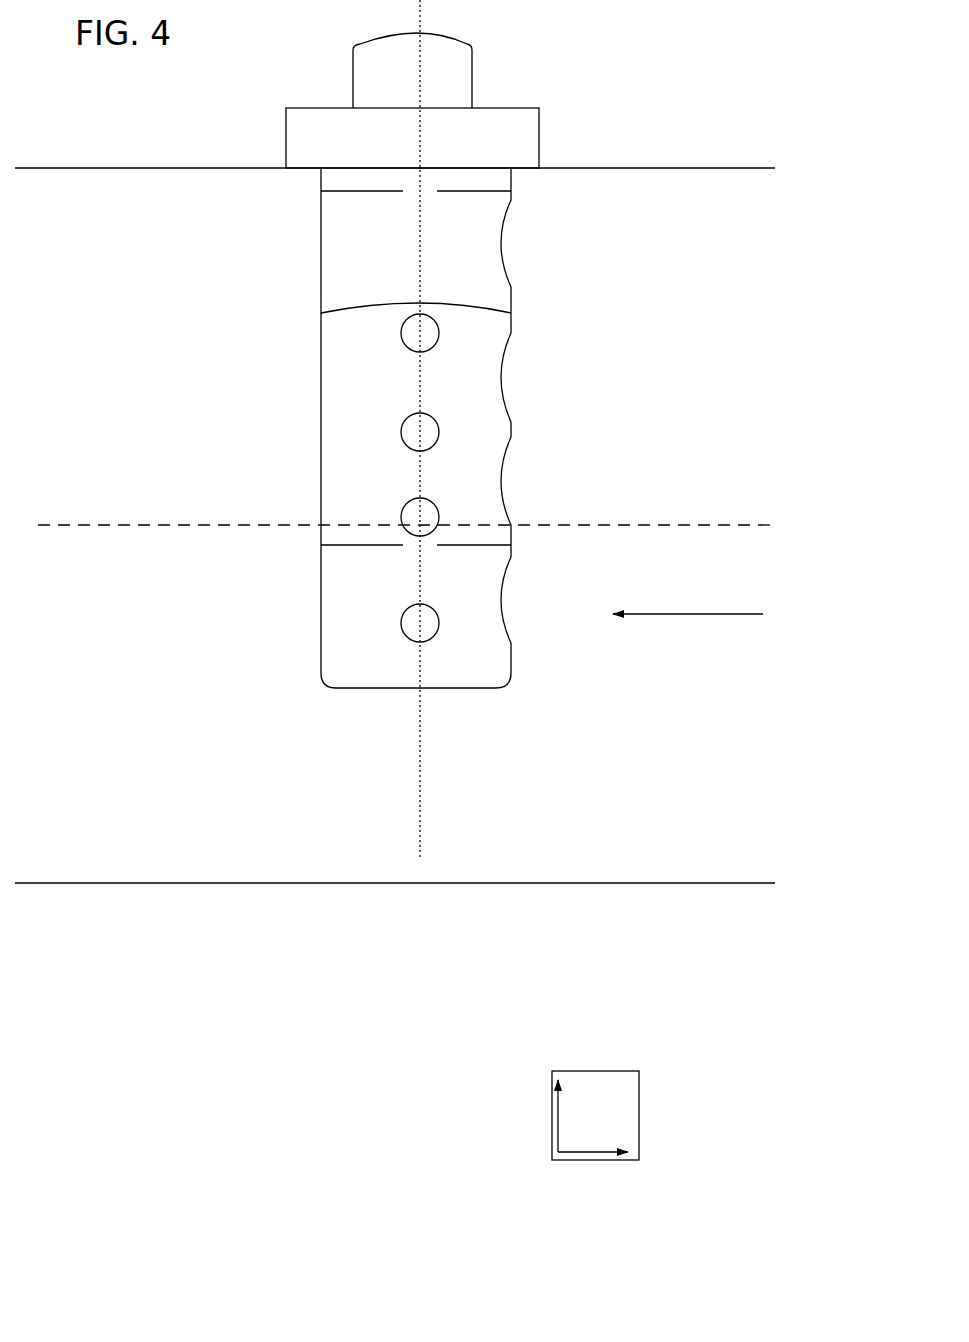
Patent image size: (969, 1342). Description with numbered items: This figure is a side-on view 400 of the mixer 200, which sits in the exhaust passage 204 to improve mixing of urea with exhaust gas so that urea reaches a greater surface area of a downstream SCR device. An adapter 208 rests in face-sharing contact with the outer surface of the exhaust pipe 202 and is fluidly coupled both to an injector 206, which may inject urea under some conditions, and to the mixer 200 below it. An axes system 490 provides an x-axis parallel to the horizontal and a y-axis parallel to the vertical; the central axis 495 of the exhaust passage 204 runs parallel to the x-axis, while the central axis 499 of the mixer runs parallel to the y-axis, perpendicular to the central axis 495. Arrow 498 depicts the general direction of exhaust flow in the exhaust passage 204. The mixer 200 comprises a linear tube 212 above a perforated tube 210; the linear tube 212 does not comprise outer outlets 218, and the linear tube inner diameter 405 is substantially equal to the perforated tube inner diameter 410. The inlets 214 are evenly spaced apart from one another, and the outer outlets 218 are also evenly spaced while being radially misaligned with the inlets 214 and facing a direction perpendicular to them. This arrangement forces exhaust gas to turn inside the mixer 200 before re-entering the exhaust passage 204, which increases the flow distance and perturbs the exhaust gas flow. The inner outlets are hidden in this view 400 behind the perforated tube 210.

The mixer 200 is at (567, 44).
The exhaust pipe 202 is at (670, 168).
The exhaust passage 204 is at (697, 343).
The injector 206 is at (399, 101).
The adapter 208 is at (360, 148).
The perforated tube 210 is at (376, 637).
The linear tube 212 is at (369, 280).
The inlets 214 is at (559, 351).
The outer outlets 218 is at (454, 399).
The side-on view 400 is at (170, 92).
The linear tube inner diameter 405 is at (416, 191).
The perforated tube inner diameter 410 is at (416, 545).
The axes system 490 is at (622, 1071).
The central axis of the exhaust passage 495 is at (714, 525).
The arrow 498 is at (699, 614).
The central axis of the mixer 499 is at (420, 766).